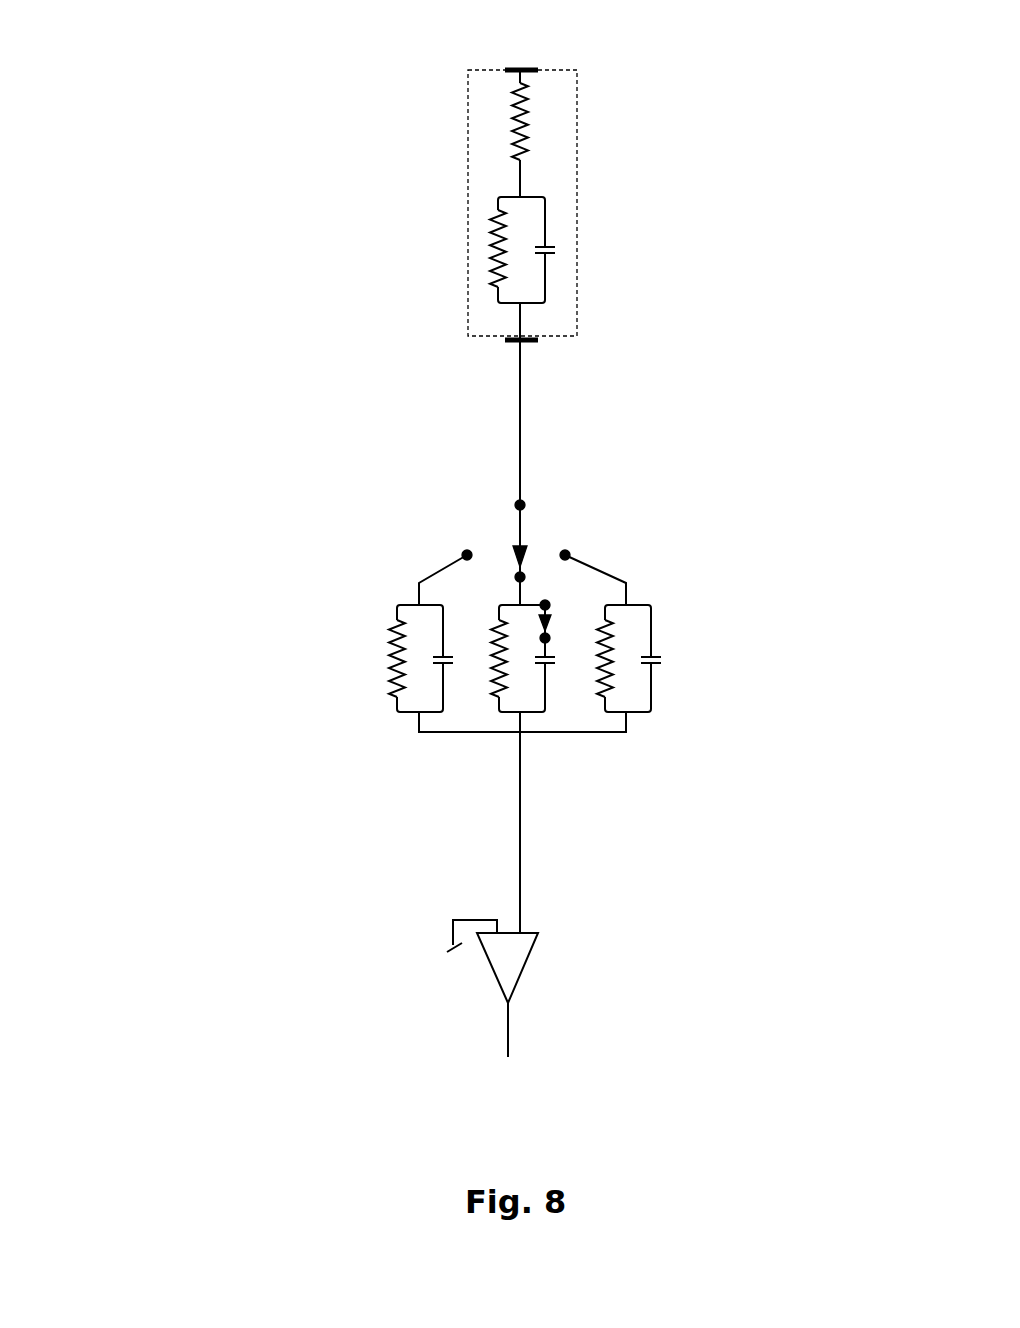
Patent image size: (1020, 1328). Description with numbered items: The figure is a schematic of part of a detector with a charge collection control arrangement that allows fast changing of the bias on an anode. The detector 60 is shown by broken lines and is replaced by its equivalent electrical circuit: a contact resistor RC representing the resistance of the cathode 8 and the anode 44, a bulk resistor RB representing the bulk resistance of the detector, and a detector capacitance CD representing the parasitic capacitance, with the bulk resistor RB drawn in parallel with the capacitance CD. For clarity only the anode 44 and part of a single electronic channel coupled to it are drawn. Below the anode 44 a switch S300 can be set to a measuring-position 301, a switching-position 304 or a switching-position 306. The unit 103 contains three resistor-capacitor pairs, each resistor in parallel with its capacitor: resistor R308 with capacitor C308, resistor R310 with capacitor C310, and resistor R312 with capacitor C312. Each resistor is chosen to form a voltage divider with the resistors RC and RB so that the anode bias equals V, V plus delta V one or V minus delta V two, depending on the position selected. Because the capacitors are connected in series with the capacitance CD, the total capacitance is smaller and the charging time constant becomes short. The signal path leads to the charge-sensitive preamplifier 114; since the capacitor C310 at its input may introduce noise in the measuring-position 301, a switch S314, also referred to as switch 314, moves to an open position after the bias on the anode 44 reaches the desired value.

The cathode 8 is at (523, 75).
The detector 60 is at (468, 125).
The contact resistor RC is at (527, 112).
The bulk resistor RB is at (488, 247).
The detector capacitance CD is at (547, 232).
The anode 44 is at (507, 342).
The switch S300 is at (520, 505).
The measuring-position 301 is at (520, 577).
The switching-position 304 is at (467, 555).
The switching-position 306 is at (565, 555).
The switch S314 is at (548, 606).
The resistor R308 is at (400, 632).
The capacitor C308 is at (443, 677).
The resistor R310 is at (492, 682).
The capacitor C310 is at (547, 673).
The resistor R312 is at (612, 677).
The capacitor C312 is at (652, 678).
The unit 103 is at (178, 644).
The switch 314 is at (523, 933).
The charge-sensitive preamplifier 114 is at (492, 970).